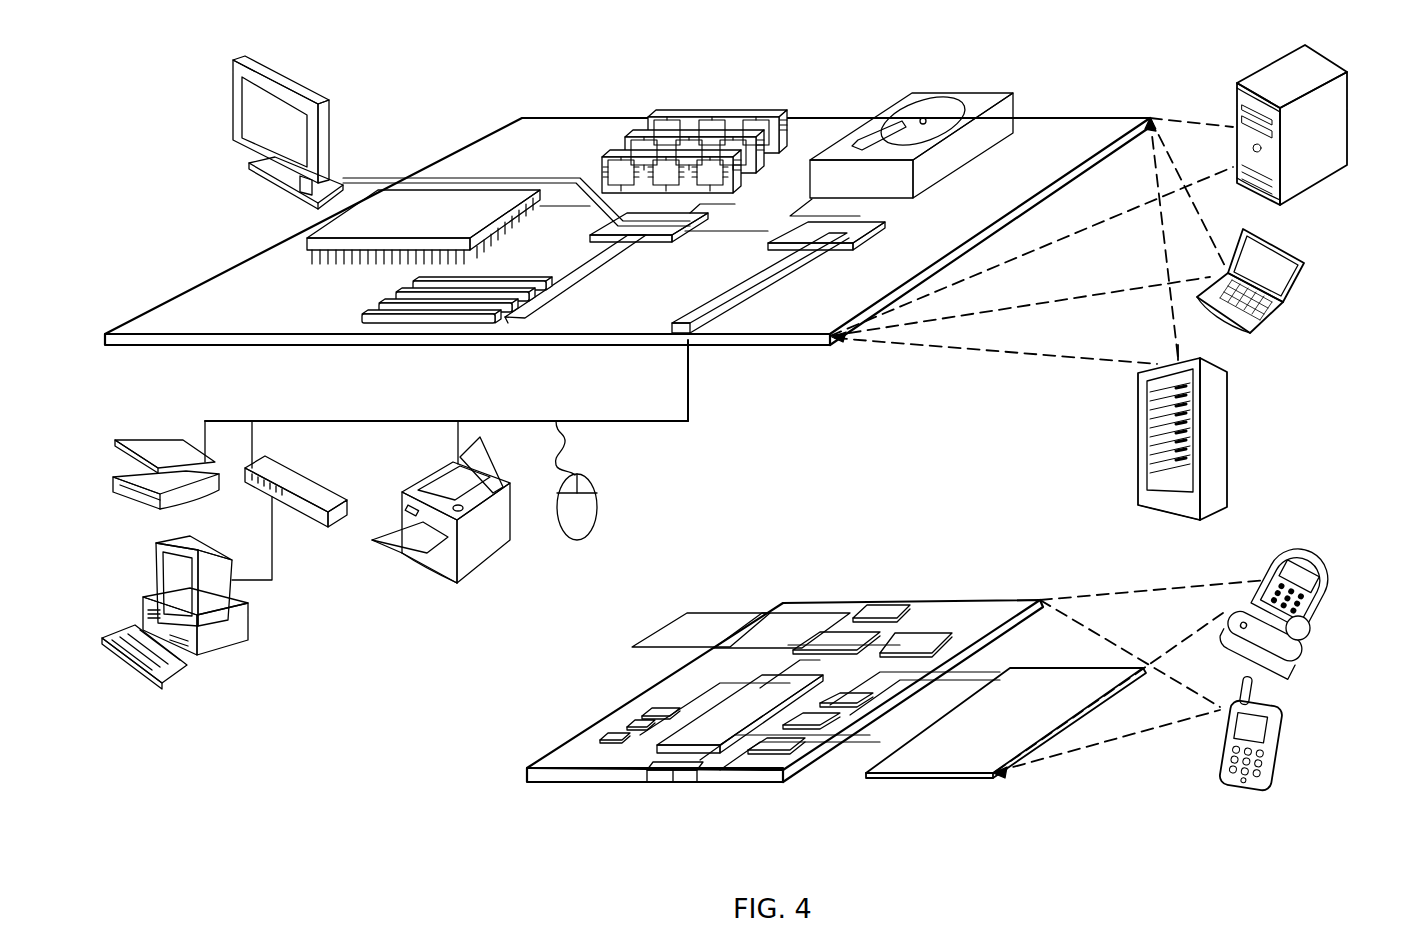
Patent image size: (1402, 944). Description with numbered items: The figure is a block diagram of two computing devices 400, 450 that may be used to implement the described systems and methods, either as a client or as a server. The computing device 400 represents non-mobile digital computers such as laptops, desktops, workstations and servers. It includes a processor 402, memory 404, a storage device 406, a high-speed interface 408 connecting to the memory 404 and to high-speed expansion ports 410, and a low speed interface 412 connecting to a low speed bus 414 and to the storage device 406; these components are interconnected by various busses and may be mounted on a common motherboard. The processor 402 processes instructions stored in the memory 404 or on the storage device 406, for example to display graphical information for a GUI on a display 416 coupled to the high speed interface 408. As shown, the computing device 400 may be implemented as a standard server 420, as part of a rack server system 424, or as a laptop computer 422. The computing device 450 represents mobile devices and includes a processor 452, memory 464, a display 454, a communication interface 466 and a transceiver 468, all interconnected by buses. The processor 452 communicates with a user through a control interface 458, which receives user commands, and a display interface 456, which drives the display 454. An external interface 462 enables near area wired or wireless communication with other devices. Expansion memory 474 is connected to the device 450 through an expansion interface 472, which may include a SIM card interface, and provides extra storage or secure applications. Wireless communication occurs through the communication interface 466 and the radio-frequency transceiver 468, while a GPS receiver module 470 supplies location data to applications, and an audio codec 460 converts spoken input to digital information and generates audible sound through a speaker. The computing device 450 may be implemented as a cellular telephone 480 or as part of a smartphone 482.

The computing device 400 is at (430, 88).
The processor 402 is at (307, 240).
The memory 404 is at (655, 110).
The storage device 406 is at (907, 97).
The high-speed interface 408 is at (627, 223).
The high-speed expansion ports 410 is at (387, 303).
The low speed interface 412 is at (805, 227).
The low speed bus 414 is at (700, 333).
The display 416 is at (237, 62).
The standard server 420 is at (1235, 100).
The laptop computer 422 is at (1317, 262).
The rack server system 424 is at (1138, 463).
The computing device 450 is at (497, 784).
The processor 452 is at (712, 737).
The display 454 is at (960, 755).
The display interface 456 is at (783, 745).
The control interface 458 is at (827, 723).
The audio codec 460 is at (847, 700).
The external interface 462 is at (675, 773).
The memory 464 is at (618, 722).
The communication interface 466 is at (835, 640).
The transceiver 468 is at (920, 640).
The GPS receiver module 470 is at (890, 600).
The expansion interface 472 is at (762, 613).
The expansion memory 474 is at (690, 613).
The cellular telephone 480 is at (1283, 553).
The smartphone 482 is at (1226, 740).